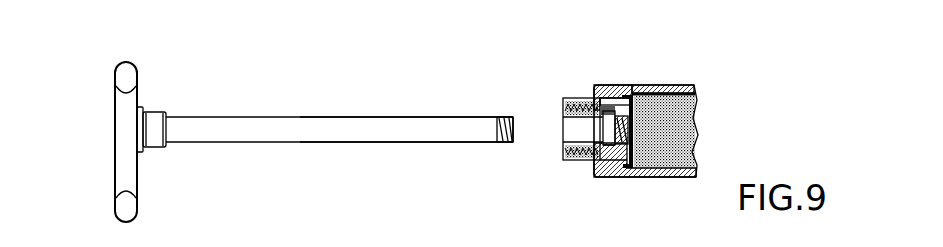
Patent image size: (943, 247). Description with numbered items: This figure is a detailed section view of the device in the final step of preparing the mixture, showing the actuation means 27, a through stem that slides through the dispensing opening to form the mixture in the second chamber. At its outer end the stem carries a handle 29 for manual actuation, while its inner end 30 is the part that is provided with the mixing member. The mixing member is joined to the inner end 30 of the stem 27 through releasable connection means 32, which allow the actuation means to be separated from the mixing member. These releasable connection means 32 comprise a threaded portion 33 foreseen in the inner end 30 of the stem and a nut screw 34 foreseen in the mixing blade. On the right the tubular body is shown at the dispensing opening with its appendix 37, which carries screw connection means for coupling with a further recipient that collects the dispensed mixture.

The actuation means 27 is at (283, 123).
The handle 29 is at (116, 66).
The inner end 30 is at (476, 135).
The releasable connection means 32 is at (514, 104).
The threaded portion 33 is at (506, 143).
The nut screw 34 is at (615, 174).
The appendix 37 is at (572, 97).